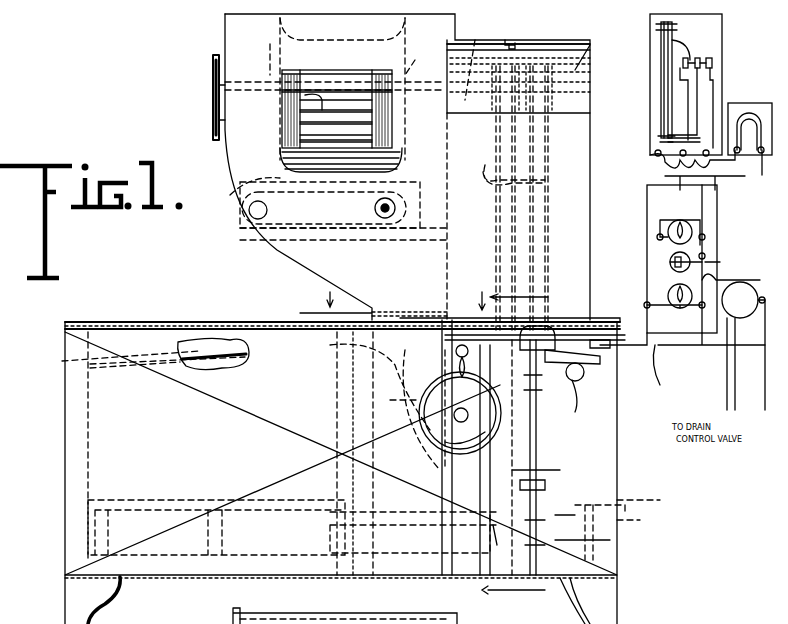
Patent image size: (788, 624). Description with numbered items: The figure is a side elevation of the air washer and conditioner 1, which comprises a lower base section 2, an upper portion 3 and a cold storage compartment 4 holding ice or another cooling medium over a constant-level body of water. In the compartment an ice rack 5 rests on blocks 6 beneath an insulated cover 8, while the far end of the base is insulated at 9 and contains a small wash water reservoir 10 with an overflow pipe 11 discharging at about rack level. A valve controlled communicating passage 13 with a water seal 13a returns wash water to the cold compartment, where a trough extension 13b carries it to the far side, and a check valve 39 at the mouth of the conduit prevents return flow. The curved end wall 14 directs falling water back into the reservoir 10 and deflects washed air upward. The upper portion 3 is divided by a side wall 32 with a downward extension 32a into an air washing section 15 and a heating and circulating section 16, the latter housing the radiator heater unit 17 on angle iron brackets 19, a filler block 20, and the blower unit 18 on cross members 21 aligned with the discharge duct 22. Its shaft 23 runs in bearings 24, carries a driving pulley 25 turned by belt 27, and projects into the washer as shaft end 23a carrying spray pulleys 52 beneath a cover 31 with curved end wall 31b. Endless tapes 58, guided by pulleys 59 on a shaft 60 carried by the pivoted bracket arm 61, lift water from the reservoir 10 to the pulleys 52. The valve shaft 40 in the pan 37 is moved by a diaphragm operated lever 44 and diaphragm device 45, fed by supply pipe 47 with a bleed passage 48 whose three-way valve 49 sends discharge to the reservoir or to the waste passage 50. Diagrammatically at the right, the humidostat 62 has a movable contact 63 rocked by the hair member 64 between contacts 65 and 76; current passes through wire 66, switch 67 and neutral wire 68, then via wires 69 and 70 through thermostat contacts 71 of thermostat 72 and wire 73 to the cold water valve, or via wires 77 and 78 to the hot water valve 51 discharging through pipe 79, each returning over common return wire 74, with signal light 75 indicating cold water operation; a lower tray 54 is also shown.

The air washer and conditioner 1 is at (205, 575).
The lower base section 2 is at (582, 492).
The upper portion or section 3 is at (268, 237).
The cold storage or reservoir compartment 4 is at (88, 480).
The ice rack 5 is at (160, 500).
The blocks or supports 6 is at (96, 527).
The cover 8 is at (125, 322).
The insulation 9 is at (606, 456).
The wash water reservoir 10 is at (570, 522).
The overflow pipe 11 is at (585, 585).
The valve controlled communicating passage 13 is at (196, 354).
The water seal or trap 13a is at (362, 407).
The trough extension 13b is at (124, 363).
The end wall 14 is at (400, 432).
The air washing section 15 is at (572, 148).
The air heating and circulating section 16 is at (236, 187).
The air heating coils or radiator heater unit 17 is at (250, 240).
The impeller fan or blower unit 18 is at (300, 108).
The angle iron brackets 19 is at (355, 230).
The filler block 20 is at (415, 222).
The cross members 21 is at (314, 197).
The discharge portion or duct 22 is at (280, 165).
The shaft 23 is at (335, 89).
The shaft end 23a is at (474, 57).
The bearings 24 is at (333, 55).
The driving pulley 25 is at (212, 70).
The driving belt 27 is at (213, 108).
The cover 31 is at (565, 42).
The curved end wall 31b is at (598, 41).
The side wall 32 is at (448, 258).
The extension 32a is at (408, 410).
The pan 37 is at (411, 301).
The check valve 39 is at (515, 550).
The shaft 40 is at (550, 340).
The diaphragm operated lever 44 is at (448, 370).
The pressure operated diaphragm device 45 is at (430, 465).
The water supply pipe 47 is at (460, 413).
The by-pass or bleed passage 48 is at (474, 415).
The three-way valve 49 is at (467, 434).
The waste passage 50 is at (585, 458).
The electrically controlled hot water valve 51 is at (598, 340).
The pulleys 52 is at (536, 198).
The lower tray 54 is at (395, 616).
The endless ribbon members or tapes 58 is at (501, 165).
The guide pulleys 59 is at (595, 515).
The shaft 60 is at (480, 520).
The bracket arm 61 is at (540, 486).
The humidostat 62 is at (540, 455).
The movable contact member 63 is at (697, 58).
The hair control member 64 is at (661, 67).
The stationary adjustable contact 65 is at (655, 42).
The wire 66 is at (730, 280).
The conditioner control switch 67 is at (672, 255).
The neutral wire 68 is at (702, 232).
The wire 69 is at (688, 95).
The wire 70 is at (660, 158).
The contacts 71 is at (762, 160).
The thermostat 72 is at (765, 98).
The wire 73 is at (652, 208).
The common return wire 74 is at (752, 345).
The signal light 75 is at (668, 228).
The stationary adjustable contact member 76 is at (712, 55).
The wire 77 is at (712, 105).
The wire 78 is at (718, 245).
The pipe 79 is at (583, 396).